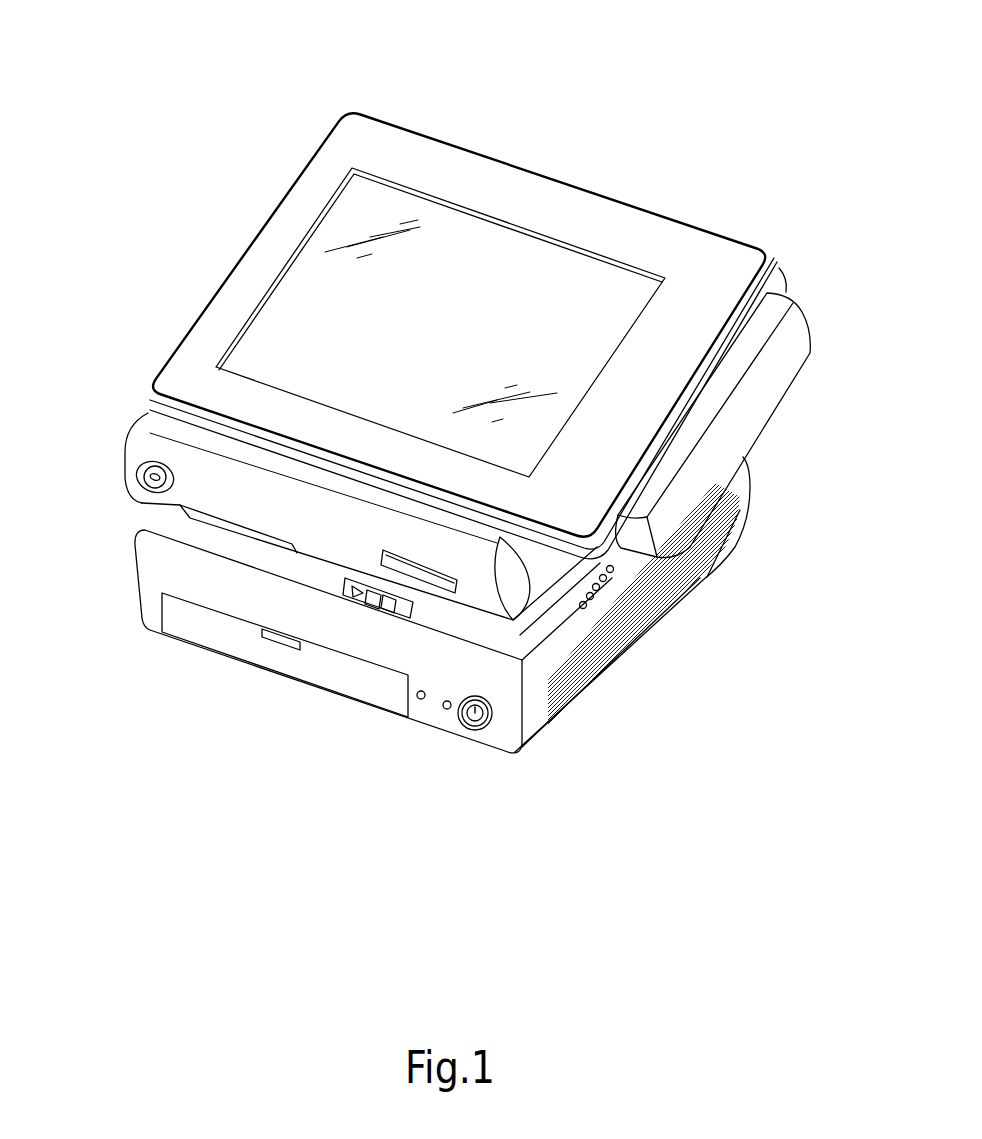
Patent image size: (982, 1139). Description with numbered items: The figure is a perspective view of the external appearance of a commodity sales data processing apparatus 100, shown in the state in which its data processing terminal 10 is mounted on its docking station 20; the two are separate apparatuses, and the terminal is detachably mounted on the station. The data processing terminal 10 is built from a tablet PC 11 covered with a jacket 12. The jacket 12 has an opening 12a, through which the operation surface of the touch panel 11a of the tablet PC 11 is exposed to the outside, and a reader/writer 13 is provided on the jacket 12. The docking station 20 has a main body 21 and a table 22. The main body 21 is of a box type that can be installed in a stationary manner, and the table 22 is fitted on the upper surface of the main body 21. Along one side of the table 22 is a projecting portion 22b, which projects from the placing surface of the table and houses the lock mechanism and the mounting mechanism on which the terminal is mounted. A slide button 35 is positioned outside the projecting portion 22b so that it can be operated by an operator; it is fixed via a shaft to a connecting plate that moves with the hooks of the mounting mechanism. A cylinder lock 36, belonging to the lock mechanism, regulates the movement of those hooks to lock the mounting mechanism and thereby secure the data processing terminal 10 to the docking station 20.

The commodity sales data processing apparatus 100 is at (655, 65).
The data processing terminal 10 is at (297, 195).
The tablet PC 11 is at (300, 288).
The touch panel 11a is at (592, 287).
The jacket 12 is at (202, 347).
The opening 12a is at (257, 310).
The reader/writer 13 is at (748, 405).
The docking station 20 is at (80, 673).
The main body 21 is at (152, 632).
The table 22 is at (130, 503).
The projecting portion 22b is at (143, 418).
The slide button 35 is at (412, 576).
The cylinder lock 36 is at (133, 488).